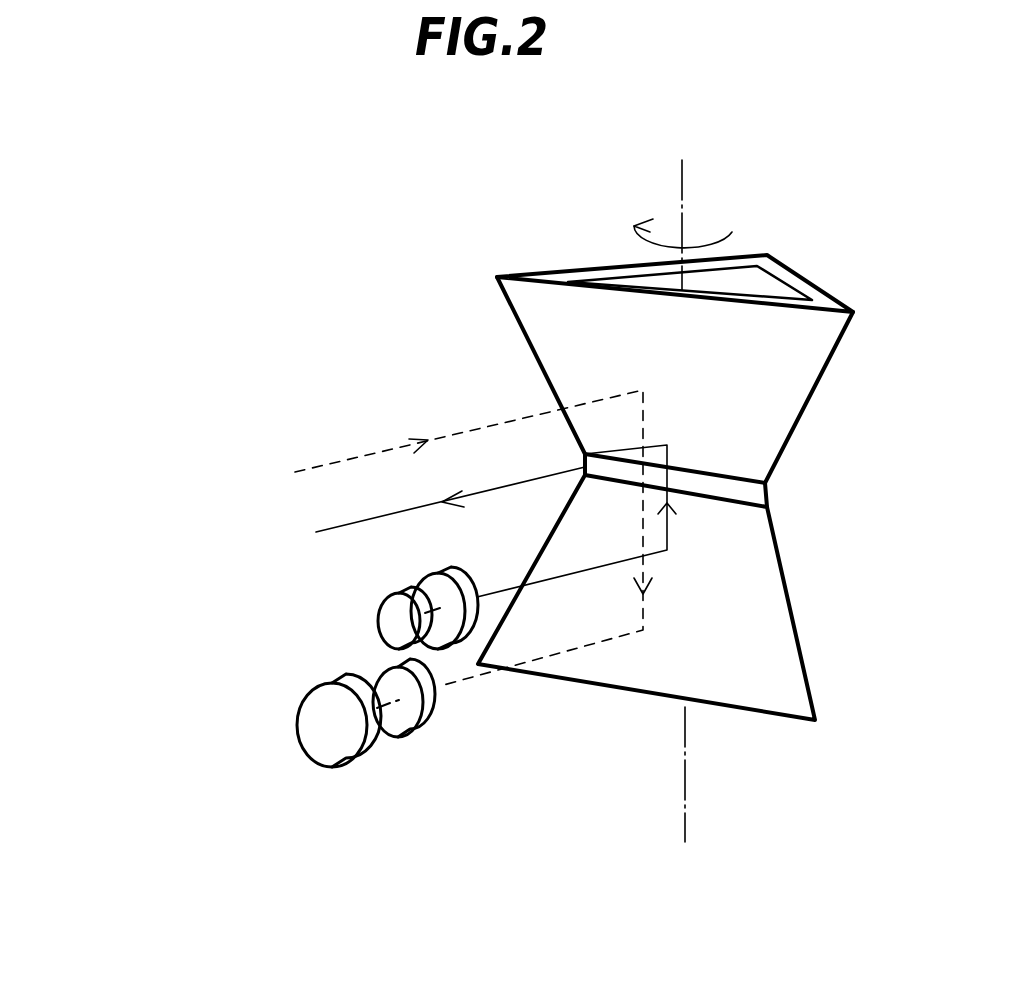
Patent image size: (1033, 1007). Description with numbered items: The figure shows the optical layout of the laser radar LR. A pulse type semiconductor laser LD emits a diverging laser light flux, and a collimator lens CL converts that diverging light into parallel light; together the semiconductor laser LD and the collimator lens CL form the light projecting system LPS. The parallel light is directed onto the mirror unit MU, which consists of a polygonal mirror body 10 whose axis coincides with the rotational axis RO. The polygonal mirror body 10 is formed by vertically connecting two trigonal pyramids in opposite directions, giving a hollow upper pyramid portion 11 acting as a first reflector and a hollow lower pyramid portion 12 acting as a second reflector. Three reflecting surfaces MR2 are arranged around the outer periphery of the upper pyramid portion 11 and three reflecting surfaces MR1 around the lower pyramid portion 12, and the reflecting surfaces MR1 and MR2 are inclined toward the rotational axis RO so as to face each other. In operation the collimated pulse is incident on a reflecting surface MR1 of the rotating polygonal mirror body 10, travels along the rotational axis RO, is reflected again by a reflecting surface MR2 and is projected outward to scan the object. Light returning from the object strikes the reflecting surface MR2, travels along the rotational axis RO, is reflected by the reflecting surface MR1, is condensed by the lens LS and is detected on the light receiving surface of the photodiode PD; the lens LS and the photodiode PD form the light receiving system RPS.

The laser radar LR is at (265, 283).
The mirror unit MU is at (496, 272).
The polygonal mirror body 10 is at (806, 290).
The upper pyramid portion 11 is at (805, 408).
The lower pyramid portion 12 is at (802, 640).
The reflecting surface MR2 is at (565, 360).
The reflecting surface MR1 is at (660, 658).
The rotational axis RO is at (680, 182).
The light projecting system LPS is at (222, 518).
The semiconductor laser LD is at (381, 596).
The collimator lens CL is at (419, 578).
The light receiving system RPS is at (470, 866).
The photodiode PD is at (336, 770).
The lens LS is at (420, 740).